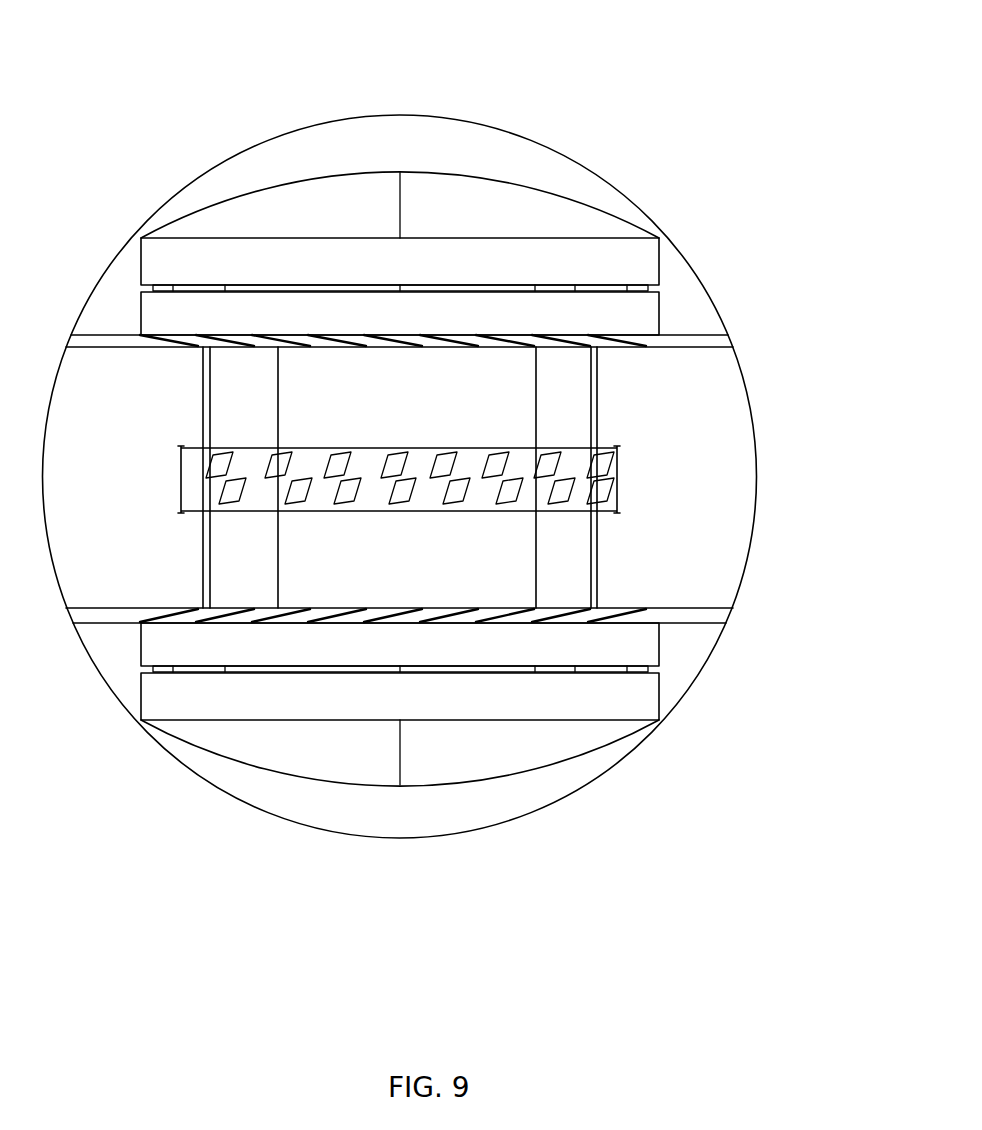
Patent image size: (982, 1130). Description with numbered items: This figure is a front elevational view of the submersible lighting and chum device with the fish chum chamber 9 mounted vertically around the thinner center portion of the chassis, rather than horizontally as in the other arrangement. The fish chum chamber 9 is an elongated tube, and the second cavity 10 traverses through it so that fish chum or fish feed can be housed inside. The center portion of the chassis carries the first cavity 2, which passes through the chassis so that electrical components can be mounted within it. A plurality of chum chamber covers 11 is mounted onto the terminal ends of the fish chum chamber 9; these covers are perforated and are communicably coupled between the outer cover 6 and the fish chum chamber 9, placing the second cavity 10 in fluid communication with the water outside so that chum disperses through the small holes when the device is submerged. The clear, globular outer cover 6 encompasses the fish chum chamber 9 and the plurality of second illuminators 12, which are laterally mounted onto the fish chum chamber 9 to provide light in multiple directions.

The outer cover 6 is at (560, 160).
The plurality of chum chamber covers 11 is at (610, 343).
The fish chum chamber 9 is at (593, 395).
The second cavity 10 is at (585, 560).
The plurality of second illuminators 12 is at (552, 462).
The first cavity 2 is at (297, 544).